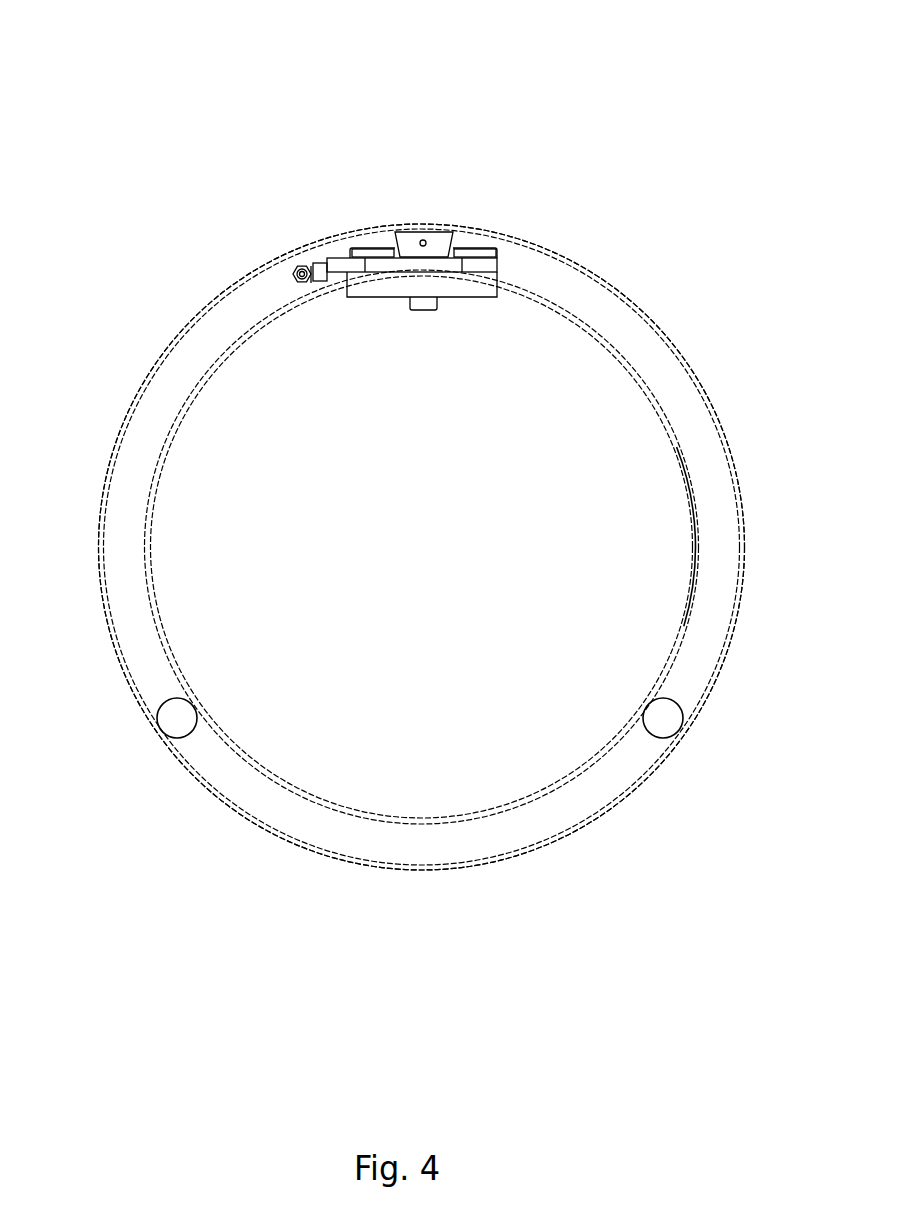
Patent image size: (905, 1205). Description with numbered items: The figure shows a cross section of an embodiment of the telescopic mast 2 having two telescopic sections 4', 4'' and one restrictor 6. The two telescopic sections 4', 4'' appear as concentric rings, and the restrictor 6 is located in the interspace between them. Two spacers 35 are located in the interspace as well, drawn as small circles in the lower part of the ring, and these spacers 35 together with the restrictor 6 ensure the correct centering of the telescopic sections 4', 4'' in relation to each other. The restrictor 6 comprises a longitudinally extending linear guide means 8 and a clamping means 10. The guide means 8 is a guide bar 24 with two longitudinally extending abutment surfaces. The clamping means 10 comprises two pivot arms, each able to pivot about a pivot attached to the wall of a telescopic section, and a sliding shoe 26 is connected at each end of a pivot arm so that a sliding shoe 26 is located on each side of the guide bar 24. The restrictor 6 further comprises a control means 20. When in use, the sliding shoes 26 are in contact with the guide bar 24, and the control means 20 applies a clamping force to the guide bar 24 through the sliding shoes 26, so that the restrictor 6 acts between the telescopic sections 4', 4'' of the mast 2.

The telescopic mast 2 is at (450, 445).
The telescopic section 4' is at (482, 546).
The telescopic section 4'' is at (464, 547).
The restrictor 6 is at (528, 195).
The linear guide means 8 is at (460, 174).
The clamping means 10 is at (260, 266).
The control means 20 is at (298, 282).
The guide bar 24 is at (438, 242).
The sliding shoe 26 is at (382, 248).
The spacer 35 is at (177, 713).